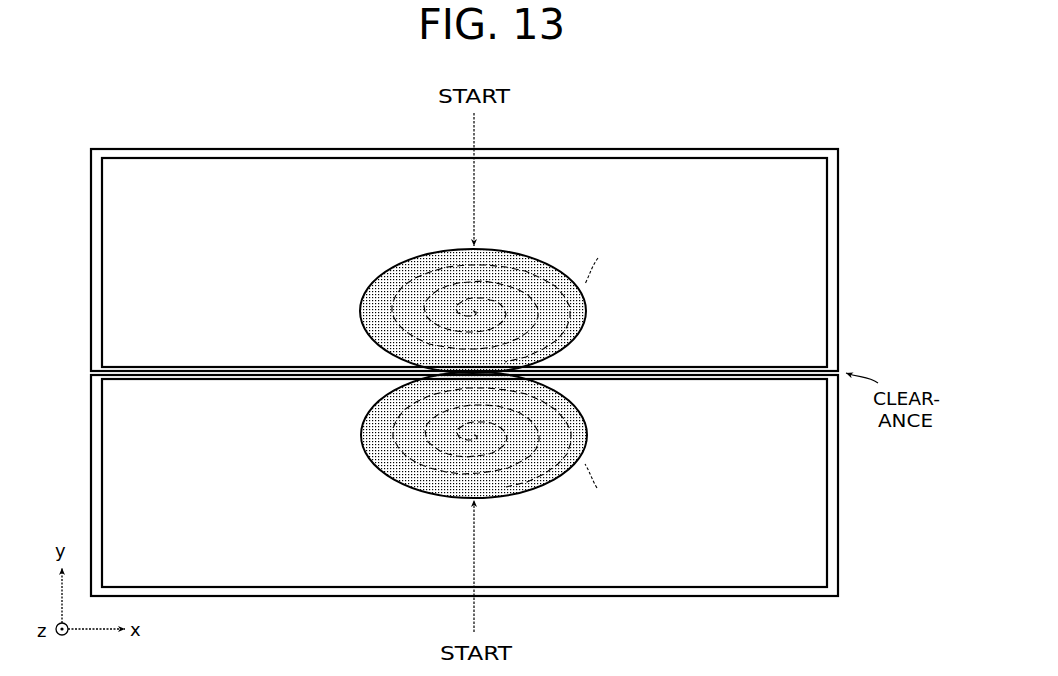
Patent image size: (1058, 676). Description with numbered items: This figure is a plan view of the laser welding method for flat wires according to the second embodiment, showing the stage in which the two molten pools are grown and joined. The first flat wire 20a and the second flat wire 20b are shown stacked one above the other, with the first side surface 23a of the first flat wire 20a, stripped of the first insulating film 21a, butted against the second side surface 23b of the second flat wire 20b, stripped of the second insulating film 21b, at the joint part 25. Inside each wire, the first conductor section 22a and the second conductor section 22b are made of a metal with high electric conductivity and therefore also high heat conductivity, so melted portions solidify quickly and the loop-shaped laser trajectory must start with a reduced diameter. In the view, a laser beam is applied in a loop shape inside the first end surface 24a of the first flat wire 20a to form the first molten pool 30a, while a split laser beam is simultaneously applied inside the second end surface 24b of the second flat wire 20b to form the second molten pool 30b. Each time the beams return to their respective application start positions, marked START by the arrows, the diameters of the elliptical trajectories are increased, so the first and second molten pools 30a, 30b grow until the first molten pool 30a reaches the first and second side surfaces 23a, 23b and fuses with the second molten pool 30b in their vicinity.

The joint part 25 is at (864, 120).
The first flat wire 20a is at (846, 268).
The second flat wire 20b is at (845, 492).
The first insulating film 21a is at (762, 150).
The second insulating film 21b is at (760, 597).
The first conductor section 22a is at (703, 158).
The second conductor section 22b is at (700, 592).
The first side surface 23a is at (768, 367).
The second side surface 23b is at (755, 379).
The first end surface 24a is at (622, 176).
The second end surface 24b is at (622, 570).
The first molten pool 30a is at (362, 300).
The second molten pool 30b is at (362, 430).